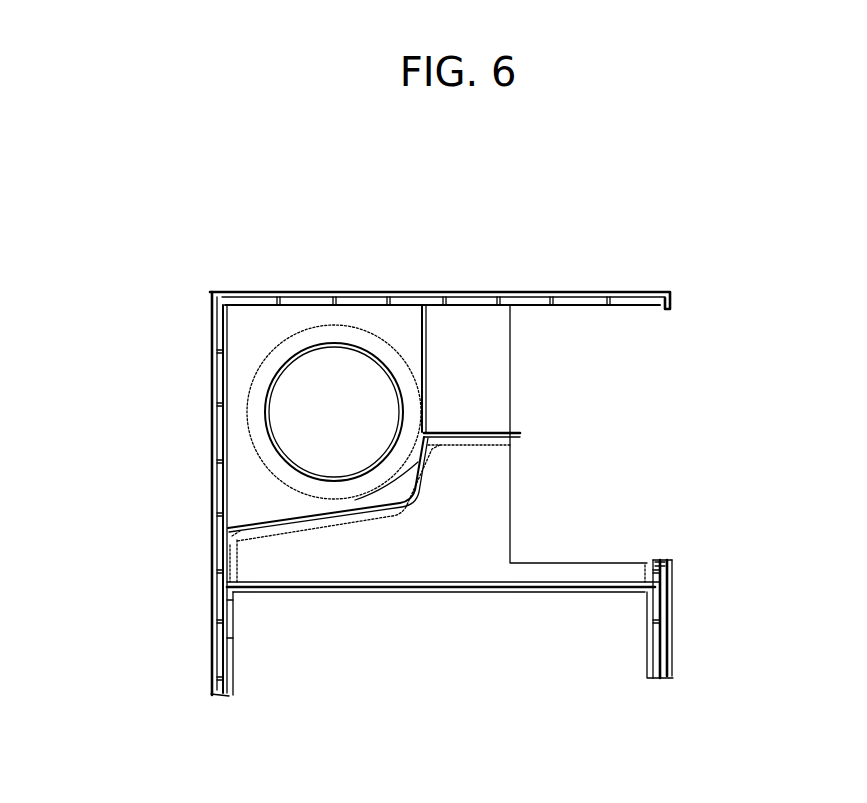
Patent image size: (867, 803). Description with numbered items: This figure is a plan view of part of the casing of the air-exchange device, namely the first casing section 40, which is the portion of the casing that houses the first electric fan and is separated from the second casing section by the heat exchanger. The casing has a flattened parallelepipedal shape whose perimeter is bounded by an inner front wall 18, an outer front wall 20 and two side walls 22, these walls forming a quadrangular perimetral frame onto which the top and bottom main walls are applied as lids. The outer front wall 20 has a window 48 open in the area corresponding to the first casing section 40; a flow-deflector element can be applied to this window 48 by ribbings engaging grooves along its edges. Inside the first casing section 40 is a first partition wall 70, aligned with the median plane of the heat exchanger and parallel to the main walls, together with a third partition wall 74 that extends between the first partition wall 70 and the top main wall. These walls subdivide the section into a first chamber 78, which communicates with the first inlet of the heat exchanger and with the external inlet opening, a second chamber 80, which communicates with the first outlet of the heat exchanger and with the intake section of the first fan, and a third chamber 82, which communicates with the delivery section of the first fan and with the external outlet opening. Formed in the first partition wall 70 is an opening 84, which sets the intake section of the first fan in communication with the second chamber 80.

The inner front wall 18 is at (210, 583).
The outer front wall 20 is at (675, 630).
The side wall 22 is at (417, 291).
The first casing section 40 is at (716, 432).
The window 48 is at (667, 570).
The first partition wall 70 is at (470, 472).
The third partition wall 74 is at (395, 500).
The first chamber 78 is at (470, 504).
The second chamber 80 is at (334, 412).
The third chamber 82 is at (471, 375).
The opening 84 is at (342, 463).